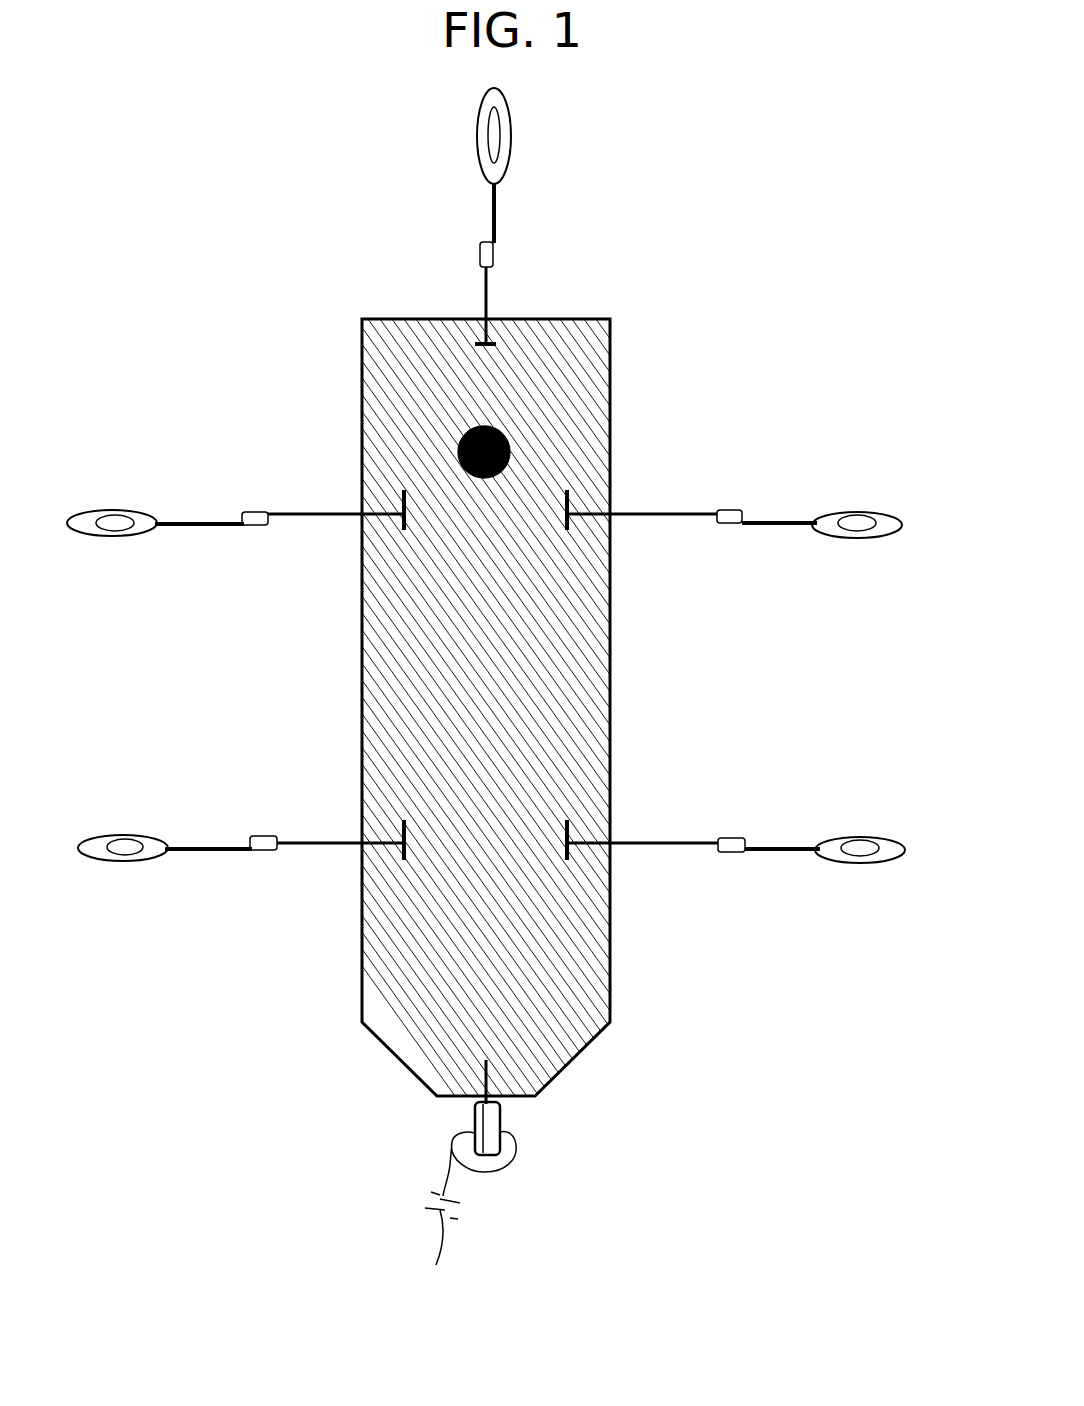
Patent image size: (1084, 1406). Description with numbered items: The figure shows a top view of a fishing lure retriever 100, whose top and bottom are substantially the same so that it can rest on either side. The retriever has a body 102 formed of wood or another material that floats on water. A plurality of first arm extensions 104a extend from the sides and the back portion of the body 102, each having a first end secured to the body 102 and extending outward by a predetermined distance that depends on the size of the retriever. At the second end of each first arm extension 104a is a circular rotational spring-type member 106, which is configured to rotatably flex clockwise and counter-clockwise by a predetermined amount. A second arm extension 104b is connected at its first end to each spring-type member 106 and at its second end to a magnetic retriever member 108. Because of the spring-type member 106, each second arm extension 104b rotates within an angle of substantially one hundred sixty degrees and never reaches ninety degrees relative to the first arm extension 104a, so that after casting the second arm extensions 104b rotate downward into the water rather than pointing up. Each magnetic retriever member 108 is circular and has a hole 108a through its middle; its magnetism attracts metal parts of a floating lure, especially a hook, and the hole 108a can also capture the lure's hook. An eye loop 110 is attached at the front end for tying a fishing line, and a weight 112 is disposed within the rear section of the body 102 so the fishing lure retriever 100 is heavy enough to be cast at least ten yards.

The fishing lure retriever 100 is at (542, 676).
The body 102 is at (402, 445).
The first arm extensions 104a is at (502, 305).
The second arm extensions 104b is at (502, 214).
The rotational spring-type member 106 is at (470, 250).
The magnetic retriever member 108 is at (472, 152).
The hole 108a is at (115, 526).
The eye loop 110 is at (508, 1120).
The weight 112 is at (514, 438).